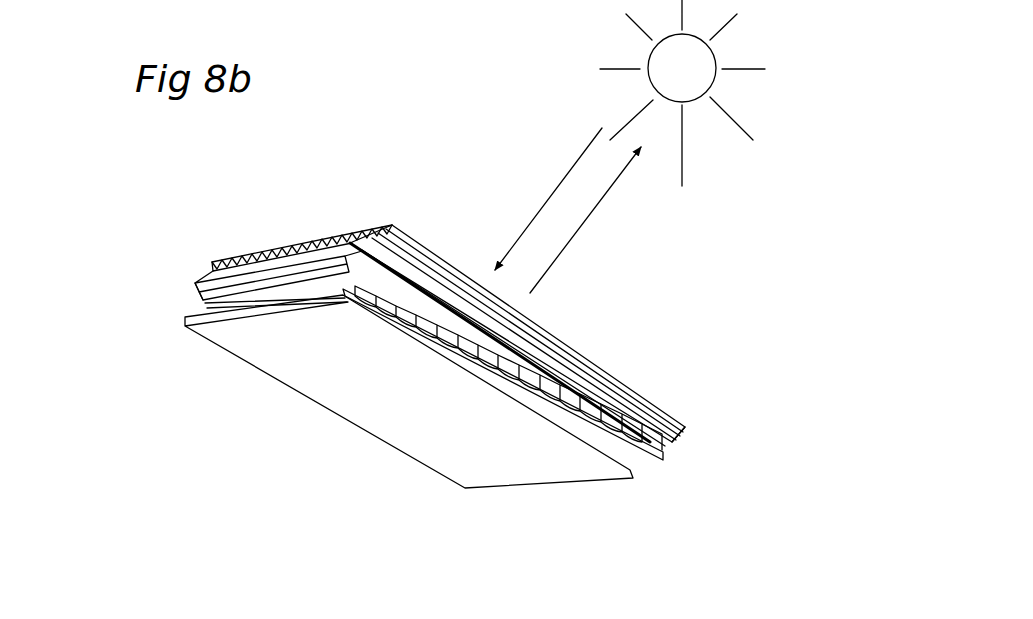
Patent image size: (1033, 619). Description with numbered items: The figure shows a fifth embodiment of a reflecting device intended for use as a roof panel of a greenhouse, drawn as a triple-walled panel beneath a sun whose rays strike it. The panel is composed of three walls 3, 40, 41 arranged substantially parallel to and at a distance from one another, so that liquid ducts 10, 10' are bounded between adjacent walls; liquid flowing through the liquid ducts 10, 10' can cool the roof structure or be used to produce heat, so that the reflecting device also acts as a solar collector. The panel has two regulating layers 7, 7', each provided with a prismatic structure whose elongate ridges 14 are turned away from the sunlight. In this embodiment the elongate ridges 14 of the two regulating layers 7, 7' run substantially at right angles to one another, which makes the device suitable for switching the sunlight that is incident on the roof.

The wall 3 is at (353, 238).
The regulating layer 7 is at (726, 445).
The regulating layer 7' is at (548, 416).
The liquid duct 10 is at (302, 215).
The liquid duct 10' is at (278, 241).
The elongate ridges 14 is at (565, 405).
The wall 40 is at (195, 283).
The wall 41 is at (260, 343).